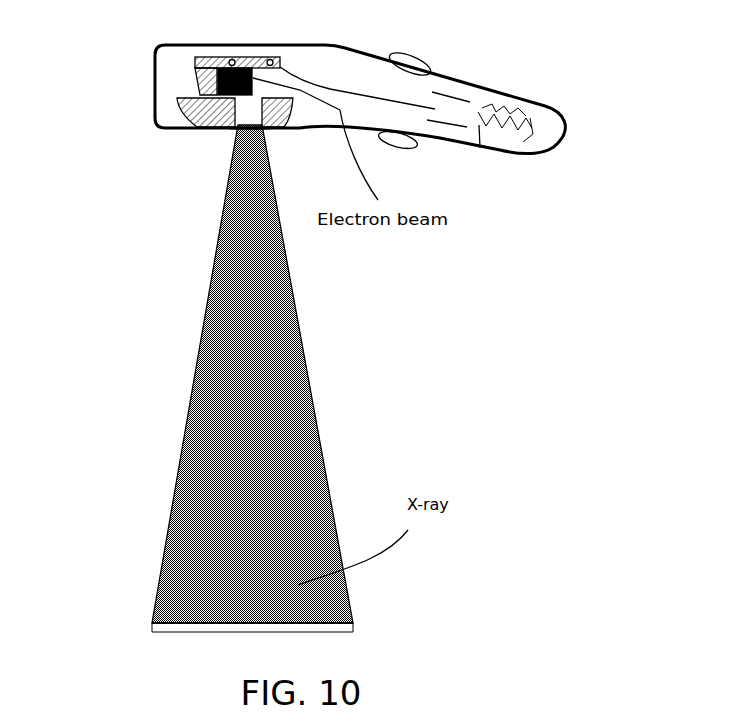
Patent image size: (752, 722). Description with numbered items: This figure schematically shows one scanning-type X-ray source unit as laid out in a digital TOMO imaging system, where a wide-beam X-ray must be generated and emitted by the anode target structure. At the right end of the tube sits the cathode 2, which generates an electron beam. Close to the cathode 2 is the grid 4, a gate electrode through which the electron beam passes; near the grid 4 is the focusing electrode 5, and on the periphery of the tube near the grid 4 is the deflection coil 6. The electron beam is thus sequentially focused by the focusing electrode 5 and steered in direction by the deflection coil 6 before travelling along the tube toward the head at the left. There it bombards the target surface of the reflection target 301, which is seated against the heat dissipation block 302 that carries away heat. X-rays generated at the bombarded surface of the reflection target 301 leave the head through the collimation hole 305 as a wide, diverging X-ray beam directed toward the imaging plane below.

The cathode 2 is at (557, 107).
The grid 4 is at (480, 148).
The focusing electrode 5 is at (457, 90).
The deflection coil 6 is at (417, 54).
The reflection target 301 is at (218, 90).
The heat dissipation block 302 is at (195, 64).
The collimation hole 305 is at (240, 133).